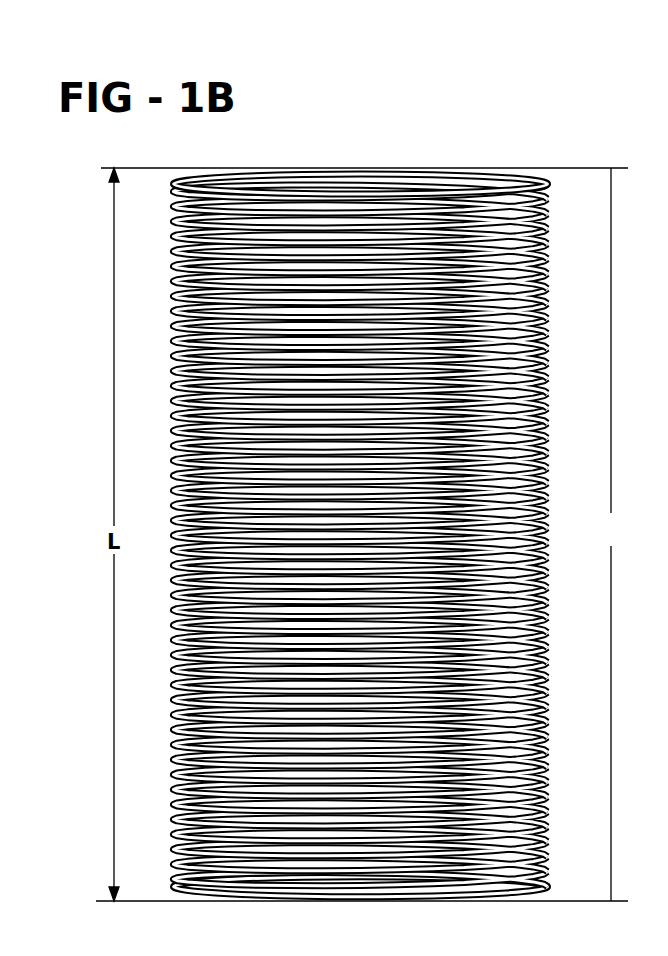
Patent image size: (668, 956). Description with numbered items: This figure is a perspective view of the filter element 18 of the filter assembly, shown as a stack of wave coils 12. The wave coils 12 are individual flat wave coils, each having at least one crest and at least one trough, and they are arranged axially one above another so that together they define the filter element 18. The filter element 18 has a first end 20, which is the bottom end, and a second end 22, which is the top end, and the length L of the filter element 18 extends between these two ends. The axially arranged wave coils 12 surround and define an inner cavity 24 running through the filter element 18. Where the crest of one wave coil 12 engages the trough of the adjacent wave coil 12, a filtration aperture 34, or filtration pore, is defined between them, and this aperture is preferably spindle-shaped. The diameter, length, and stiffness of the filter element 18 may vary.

The wave coils 12 is at (522, 179).
The filter element 18 is at (617, 534).
The first end 20 is at (359, 894).
The second end 22 is at (352, 186).
The inner cavity 24 is at (369, 186).
The filtration aperture 34 is at (363, 383).